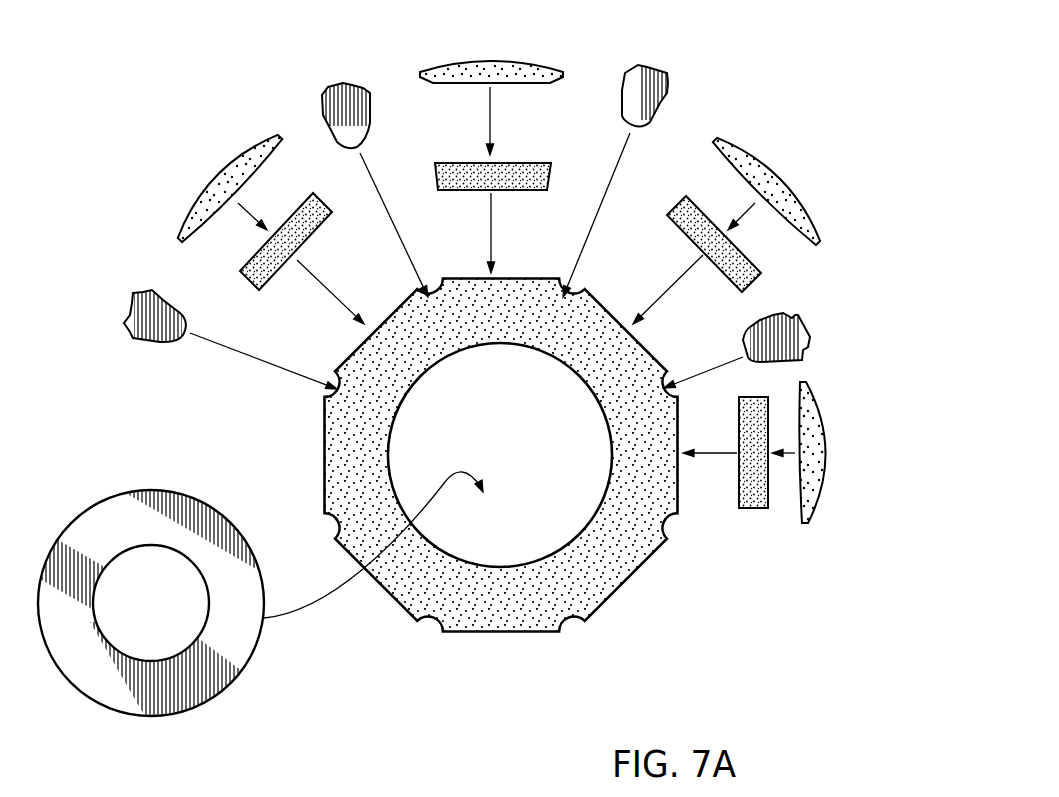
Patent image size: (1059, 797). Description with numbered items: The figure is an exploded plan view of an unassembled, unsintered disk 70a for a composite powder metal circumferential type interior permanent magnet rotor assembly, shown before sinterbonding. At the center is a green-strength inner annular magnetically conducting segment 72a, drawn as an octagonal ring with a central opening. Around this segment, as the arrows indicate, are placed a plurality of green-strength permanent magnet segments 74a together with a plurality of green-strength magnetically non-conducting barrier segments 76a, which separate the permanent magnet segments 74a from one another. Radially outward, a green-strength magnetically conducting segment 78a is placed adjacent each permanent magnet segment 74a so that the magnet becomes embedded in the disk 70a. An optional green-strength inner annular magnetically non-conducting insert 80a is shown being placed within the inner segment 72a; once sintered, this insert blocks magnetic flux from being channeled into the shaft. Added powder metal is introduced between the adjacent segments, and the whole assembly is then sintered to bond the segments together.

The disk 70a is at (102, 210).
The inner annular magnetically conducting segment 72a is at (390, 453).
The permanent magnet segment 74a is at (462, 164).
The magnetically non-conducting barrier segment 76a is at (324, 93).
The outer magnetically conducting segment 78a is at (208, 193).
The inner annular magnetically non-conducting insert 80a is at (233, 519).